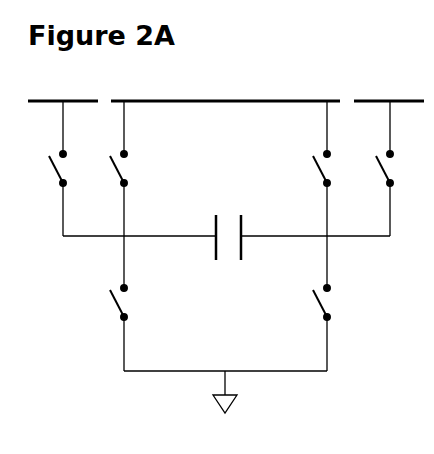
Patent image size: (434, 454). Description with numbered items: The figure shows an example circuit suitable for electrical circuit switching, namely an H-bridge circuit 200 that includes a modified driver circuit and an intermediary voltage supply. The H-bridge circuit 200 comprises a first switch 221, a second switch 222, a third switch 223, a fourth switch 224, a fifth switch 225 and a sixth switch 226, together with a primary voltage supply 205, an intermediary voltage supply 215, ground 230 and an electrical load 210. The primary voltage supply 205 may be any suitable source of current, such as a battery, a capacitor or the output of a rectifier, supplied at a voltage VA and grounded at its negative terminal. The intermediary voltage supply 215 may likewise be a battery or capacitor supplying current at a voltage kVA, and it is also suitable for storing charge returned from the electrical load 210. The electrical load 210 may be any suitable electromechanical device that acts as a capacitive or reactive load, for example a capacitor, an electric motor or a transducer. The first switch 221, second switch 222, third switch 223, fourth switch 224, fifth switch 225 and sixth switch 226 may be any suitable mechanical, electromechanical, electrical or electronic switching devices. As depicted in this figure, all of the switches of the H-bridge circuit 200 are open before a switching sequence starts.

The H-bridge circuit 200 is at (67, 297).
The primary voltage supply 205 is at (207, 99).
The electrical load 210 is at (214, 258).
The intermediary voltage supply 215 is at (91, 99).
The first switch (S1) 221 is at (118, 174).
The second switch (S2) 222 is at (57, 174).
The third switch (S3) 223 is at (117, 310).
The fourth switch (S4) 224 is at (319, 175).
The fifth switch (S5) 225 is at (382, 175).
The sixth switch (S6) 226 is at (319, 310).
The ground 230 is at (217, 407).